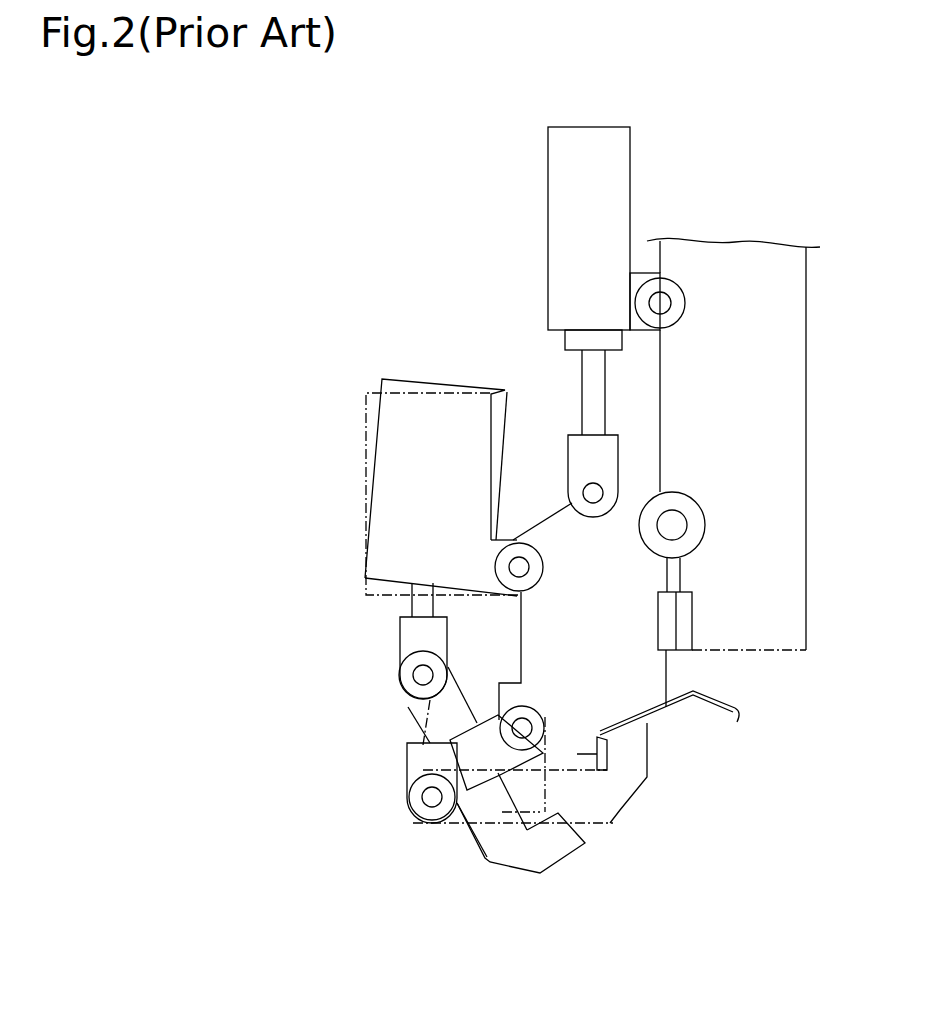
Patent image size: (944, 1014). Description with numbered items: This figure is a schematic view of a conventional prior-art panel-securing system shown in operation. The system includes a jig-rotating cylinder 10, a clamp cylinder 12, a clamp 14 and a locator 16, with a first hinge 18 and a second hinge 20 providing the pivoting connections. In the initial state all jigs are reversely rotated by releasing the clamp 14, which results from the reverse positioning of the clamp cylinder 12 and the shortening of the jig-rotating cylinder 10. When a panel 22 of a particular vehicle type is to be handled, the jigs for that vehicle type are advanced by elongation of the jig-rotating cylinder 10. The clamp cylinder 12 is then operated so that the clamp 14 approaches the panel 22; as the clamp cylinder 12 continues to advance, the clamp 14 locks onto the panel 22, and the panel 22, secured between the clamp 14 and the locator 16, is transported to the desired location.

The jig-rotating cylinder 10 is at (548, 178).
The clamp cylinder 12 is at (410, 378).
The clamp 14 is at (492, 750).
The locator 16 is at (567, 520).
The first hinge 18 is at (522, 540).
The second hinge 20 is at (693, 498).
The panel 22 is at (658, 735).